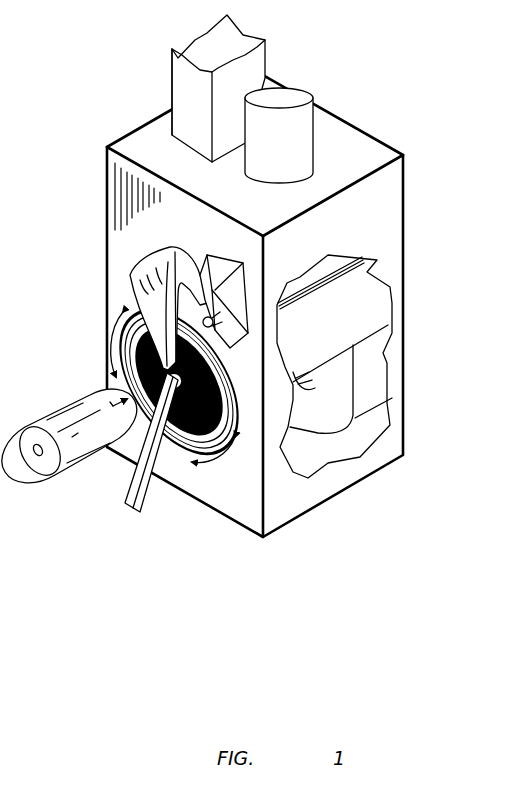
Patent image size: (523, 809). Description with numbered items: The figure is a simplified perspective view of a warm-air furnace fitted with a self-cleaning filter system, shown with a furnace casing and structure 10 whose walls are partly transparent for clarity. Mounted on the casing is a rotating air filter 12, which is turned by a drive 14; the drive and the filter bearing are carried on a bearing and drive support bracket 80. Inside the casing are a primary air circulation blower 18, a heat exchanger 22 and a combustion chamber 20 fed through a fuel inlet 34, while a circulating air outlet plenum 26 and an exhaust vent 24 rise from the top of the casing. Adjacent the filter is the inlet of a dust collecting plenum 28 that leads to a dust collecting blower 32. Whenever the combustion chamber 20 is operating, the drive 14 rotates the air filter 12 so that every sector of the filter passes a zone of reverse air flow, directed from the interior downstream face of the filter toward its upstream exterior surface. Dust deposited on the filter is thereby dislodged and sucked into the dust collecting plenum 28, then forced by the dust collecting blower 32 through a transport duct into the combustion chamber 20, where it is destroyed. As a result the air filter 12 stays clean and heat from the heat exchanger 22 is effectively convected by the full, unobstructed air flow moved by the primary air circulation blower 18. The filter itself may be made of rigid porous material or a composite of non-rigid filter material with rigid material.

The furnace casing and structure 10 is at (378, 200).
The air filter 12 is at (222, 408).
The drive 14 is at (83, 420).
The primary air circulation blower 18 is at (333, 400).
The combustion chamber 20 is at (343, 317).
The heat exchanger 22 is at (330, 263).
The exhaust vent 24 is at (292, 115).
The circulating air outlet plenum 26 is at (227, 43).
The dust collecting plenum 28 is at (140, 300).
The dust collecting blower 32 is at (215, 263).
The fuel inlet 34 is at (212, 318).
The bearing and drive support bracket 80 is at (162, 478).